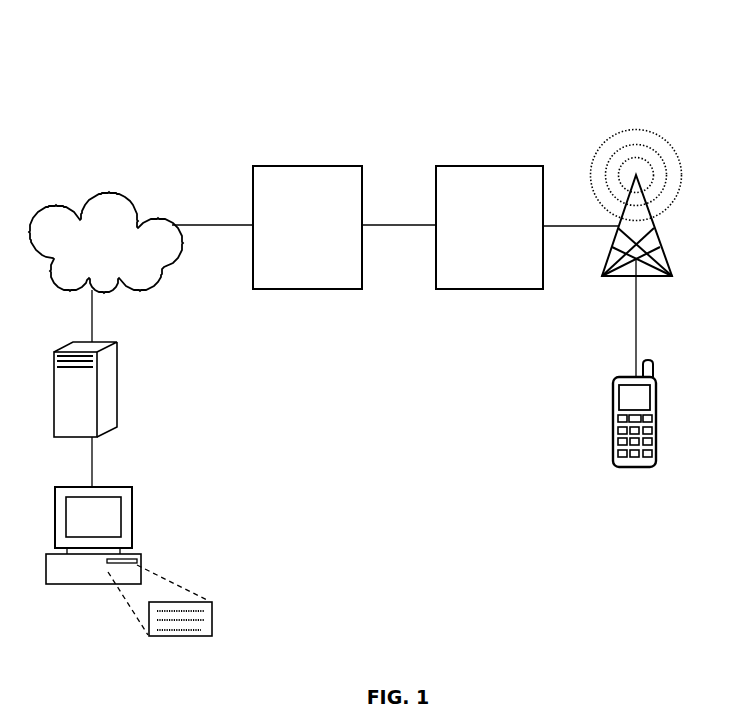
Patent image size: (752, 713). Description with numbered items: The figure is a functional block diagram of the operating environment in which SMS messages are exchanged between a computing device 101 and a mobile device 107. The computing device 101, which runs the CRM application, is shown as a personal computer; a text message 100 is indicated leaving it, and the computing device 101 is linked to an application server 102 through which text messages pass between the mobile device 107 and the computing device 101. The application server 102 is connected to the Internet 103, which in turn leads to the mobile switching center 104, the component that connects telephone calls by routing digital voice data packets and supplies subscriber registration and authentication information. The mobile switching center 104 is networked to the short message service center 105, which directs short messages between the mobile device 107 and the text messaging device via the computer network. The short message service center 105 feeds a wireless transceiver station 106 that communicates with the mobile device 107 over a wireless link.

The text message 100 is at (212, 622).
The computing device 101 is at (133, 523).
The application server 102 is at (118, 386).
The Internet 103 is at (108, 196).
The mobile switching center (MSC) 104 is at (307, 165).
The short message service center (SMSC) 105 is at (487, 165).
The wireless transceiver station 106 is at (659, 238).
The mobile device 107 is at (658, 422).